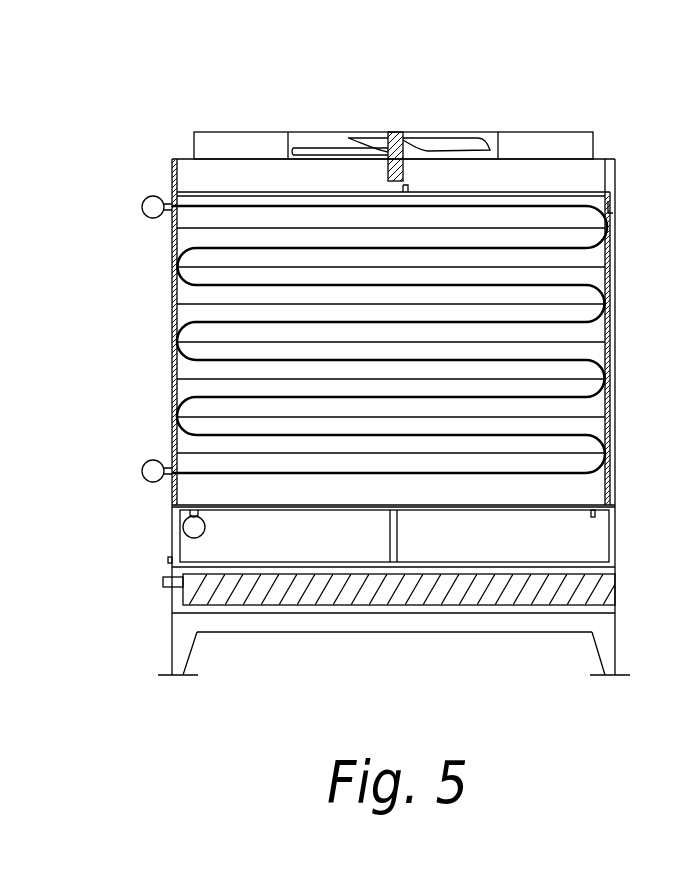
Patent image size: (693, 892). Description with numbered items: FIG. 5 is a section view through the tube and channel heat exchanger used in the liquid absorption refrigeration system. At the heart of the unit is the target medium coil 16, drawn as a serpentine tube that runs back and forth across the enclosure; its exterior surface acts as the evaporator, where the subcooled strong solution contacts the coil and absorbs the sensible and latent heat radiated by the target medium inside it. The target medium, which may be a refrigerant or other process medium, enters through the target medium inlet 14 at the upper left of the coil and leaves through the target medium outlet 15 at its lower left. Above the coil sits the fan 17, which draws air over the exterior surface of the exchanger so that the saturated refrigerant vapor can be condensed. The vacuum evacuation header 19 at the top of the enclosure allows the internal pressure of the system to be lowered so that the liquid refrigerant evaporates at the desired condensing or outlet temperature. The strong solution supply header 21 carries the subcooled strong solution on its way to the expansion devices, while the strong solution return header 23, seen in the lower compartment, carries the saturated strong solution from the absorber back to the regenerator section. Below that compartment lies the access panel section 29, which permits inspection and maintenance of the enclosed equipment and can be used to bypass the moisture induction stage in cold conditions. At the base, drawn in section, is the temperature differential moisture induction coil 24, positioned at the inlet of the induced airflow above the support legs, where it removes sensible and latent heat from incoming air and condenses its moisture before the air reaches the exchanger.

The target medium inlet 14 is at (142, 212).
The target medium outlet 15 is at (150, 460).
The target medium coil 16 is at (206, 207).
The fan 17 is at (394, 132).
The vacuum evacuation header 19 is at (598, 192).
The strong solution supply header 21 is at (604, 192).
The strong solution return header 23 is at (182, 526).
The temperature differential moisture induction coil 24 is at (268, 593).
The access panel section 29 is at (225, 551).